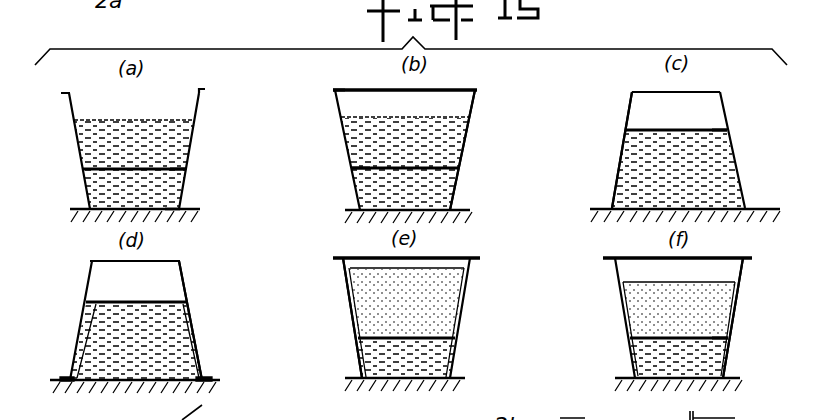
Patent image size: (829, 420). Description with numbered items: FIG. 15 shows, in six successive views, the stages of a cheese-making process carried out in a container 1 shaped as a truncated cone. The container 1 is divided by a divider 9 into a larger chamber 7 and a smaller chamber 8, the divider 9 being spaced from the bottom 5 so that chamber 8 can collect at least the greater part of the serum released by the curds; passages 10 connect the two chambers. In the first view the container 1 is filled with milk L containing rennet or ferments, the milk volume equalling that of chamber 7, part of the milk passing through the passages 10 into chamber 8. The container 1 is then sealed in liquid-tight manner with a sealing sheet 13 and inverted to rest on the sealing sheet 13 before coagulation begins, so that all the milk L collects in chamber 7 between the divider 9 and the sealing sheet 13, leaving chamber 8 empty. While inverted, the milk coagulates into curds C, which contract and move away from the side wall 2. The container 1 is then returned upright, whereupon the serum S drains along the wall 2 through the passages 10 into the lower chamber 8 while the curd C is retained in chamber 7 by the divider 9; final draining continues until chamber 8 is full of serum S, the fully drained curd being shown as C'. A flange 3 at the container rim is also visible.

The container 1 is at (66, 113).
The side wall 2 is at (463, 140).
The flange 3 is at (205, 89).
The bottom 5 is at (175, 210).
The larger chamber 7 is at (138, 113).
The chamber 8 is at (105, 185).
The divider 9 is at (163, 168).
The passages 10 is at (186, 170).
The sealing sheet 13 is at (335, 90).
The milk L is at (105, 140).
The curds C is at (269, 324).
The hardened cement C' is at (656, 310).
The serum S is at (415, 367).